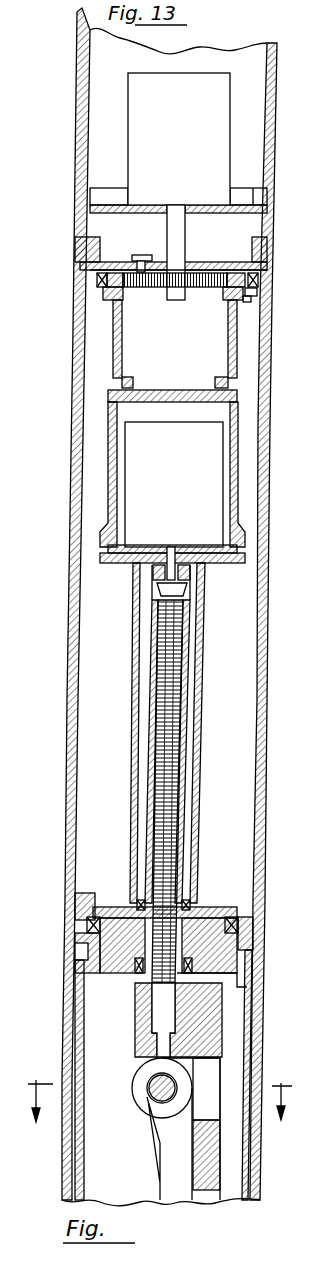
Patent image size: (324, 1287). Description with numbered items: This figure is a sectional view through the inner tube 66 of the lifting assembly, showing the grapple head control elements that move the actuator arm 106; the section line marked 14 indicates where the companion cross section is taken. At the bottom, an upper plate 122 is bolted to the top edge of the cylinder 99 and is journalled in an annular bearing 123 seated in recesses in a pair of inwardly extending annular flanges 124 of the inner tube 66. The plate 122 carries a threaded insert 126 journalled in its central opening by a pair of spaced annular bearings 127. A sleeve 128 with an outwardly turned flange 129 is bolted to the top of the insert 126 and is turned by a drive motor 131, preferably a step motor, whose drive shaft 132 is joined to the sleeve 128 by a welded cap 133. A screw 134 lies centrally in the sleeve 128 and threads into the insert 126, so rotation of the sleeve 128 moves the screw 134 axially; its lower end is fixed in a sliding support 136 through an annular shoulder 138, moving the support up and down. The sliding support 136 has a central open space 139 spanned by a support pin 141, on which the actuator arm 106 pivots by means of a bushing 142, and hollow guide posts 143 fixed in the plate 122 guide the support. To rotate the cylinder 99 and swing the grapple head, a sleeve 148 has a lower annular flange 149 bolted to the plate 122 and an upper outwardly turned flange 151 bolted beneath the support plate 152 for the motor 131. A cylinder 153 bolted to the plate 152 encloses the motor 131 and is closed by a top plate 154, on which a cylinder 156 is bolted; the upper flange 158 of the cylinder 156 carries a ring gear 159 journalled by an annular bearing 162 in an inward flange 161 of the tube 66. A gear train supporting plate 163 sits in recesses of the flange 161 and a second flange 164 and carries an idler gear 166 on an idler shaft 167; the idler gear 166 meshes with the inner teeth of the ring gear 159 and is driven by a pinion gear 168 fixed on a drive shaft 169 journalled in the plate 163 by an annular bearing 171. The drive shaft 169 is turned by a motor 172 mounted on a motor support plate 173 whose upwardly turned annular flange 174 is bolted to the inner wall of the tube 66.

The section line 14- 14 is at (160, 1113).
The inner tube 66 is at (273, 142).
The cylinder 99 is at (249, 1170).
The actuator arm 106 is at (323, 569).
The upper plate 122 is at (227, 955).
The annular bearing 123 is at (250, 935).
The annular flanges 124 is at (248, 920).
The threaded insert 126 is at (138, 962).
The annular bearings 127 is at (140, 900).
The sleeve 128 is at (184, 752).
The outwardly turned flange 129 is at (196, 882).
The drive motor 131 is at (165, 493).
The drive shaft 132 is at (172, 547).
The welded cap 133 is at (192, 582).
The screw 134 is at (178, 652).
The sliding support 136 is at (222, 1108).
The annular shoulder 138 is at (152, 1030).
The central open space 139 is at (212, 1108).
The support pin 141 is at (152, 1098).
The bushing 142 is at (115, 1076).
The guide posts 143 is at (247, 990).
The sleeve 148 is at (203, 705).
The annular flange 149 is at (218, 905).
The outwardly turned flange 151 is at (244, 562).
The support plate 152 is at (234, 548).
The cylinder 153 is at (239, 470).
The top plate 154 is at (240, 396).
The cylinder 156 is at (240, 362).
The outwardly turned flange 158 is at (262, 295).
The ring gear 159 is at (228, 292).
The flange 161 is at (268, 292).
The annular bearing 162 is at (265, 276).
The gear train supporting plate 163 is at (228, 258).
The second flange 164 is at (270, 242).
The idler gear 166 is at (144, 290).
The idler shaft 167 is at (137, 255).
The pinion gear 168 is at (186, 290).
The drive shaft 169 is at (186, 232).
The annular bearing 171 is at (158, 262).
The motor 172 is at (178, 135).
The motor support plate 173 is at (238, 190).
The annular flange 174 is at (262, 202).